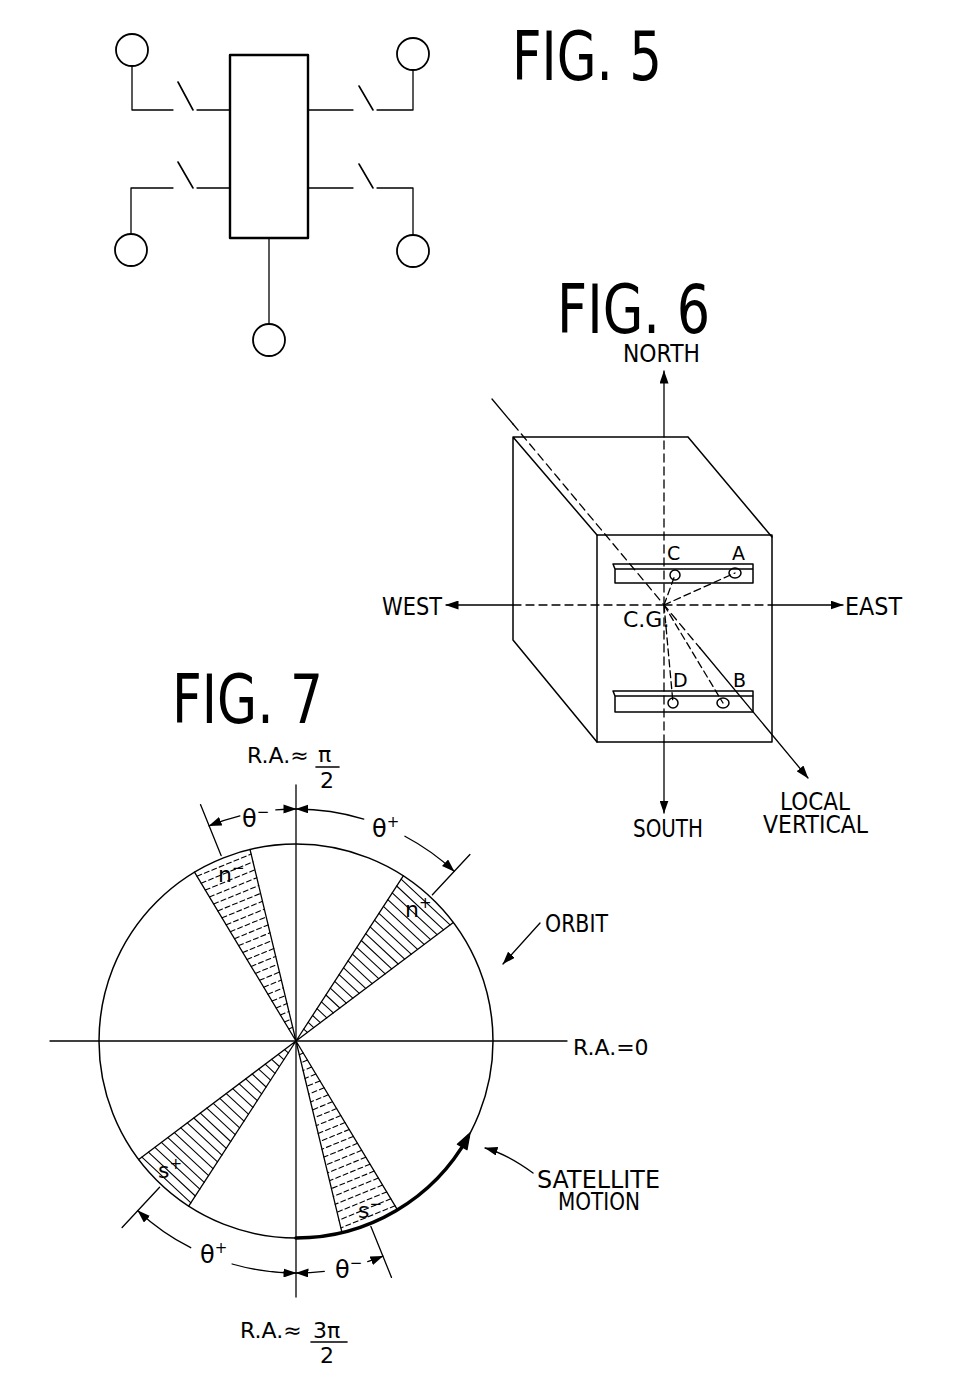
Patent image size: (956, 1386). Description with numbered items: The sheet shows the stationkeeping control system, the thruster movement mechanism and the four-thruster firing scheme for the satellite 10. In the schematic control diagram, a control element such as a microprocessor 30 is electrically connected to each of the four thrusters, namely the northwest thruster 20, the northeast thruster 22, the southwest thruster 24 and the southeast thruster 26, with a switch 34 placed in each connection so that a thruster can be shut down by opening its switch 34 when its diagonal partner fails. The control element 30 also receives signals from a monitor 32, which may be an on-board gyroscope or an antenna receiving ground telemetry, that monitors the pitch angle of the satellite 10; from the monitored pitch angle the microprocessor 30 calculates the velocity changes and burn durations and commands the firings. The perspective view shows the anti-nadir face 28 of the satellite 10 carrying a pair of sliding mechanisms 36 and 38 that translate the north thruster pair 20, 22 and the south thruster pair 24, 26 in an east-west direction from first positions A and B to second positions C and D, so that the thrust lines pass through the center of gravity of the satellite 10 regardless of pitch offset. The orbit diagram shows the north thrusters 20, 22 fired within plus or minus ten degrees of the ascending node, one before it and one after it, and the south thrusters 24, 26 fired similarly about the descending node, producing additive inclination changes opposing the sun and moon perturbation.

In FIG. 6, the satellite 10 is at (696, 583).
In FIG. 5, the northwest thruster 20 is at (128, 52).
In FIG. 6, the northwest thruster 20 is at (677, 571).
In FIG. 5, the northeast thruster 22 is at (415, 47).
In FIG. 6, the northeast thruster 22 is at (741, 575).
In FIG. 5, the southwest thruster 24 is at (130, 254).
In FIG. 6, the southwest thruster 24 is at (674, 709).
In FIG. 5, the southeast thruster 26 is at (418, 248).
In FIG. 6, the southeast thruster 26 is at (722, 709).
In FIG. 6, the anti-nadir face 28 is at (760, 658).
In FIG. 5, the microprocessor 30 is at (285, 156).
In FIG. 5, the monitor 32 is at (270, 338).
In FIG. 5, the switch 34 is at (275, 149).
In FIG. 6, the sliding mechanism 36 is at (712, 570).
In FIG. 6, the sliding mechanism 38 is at (628, 705).